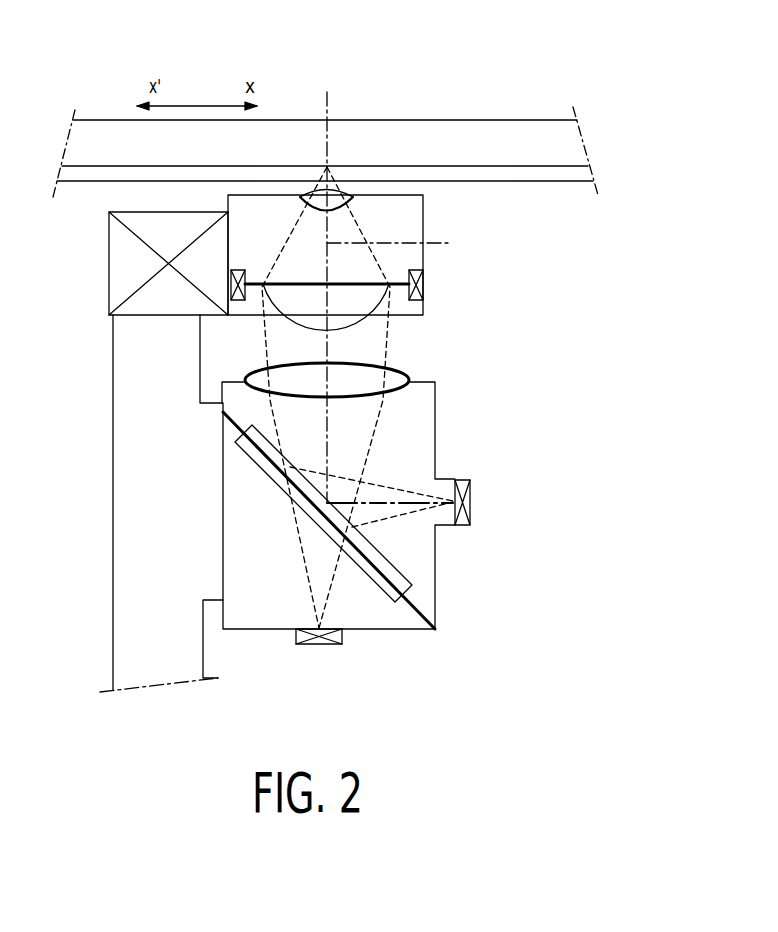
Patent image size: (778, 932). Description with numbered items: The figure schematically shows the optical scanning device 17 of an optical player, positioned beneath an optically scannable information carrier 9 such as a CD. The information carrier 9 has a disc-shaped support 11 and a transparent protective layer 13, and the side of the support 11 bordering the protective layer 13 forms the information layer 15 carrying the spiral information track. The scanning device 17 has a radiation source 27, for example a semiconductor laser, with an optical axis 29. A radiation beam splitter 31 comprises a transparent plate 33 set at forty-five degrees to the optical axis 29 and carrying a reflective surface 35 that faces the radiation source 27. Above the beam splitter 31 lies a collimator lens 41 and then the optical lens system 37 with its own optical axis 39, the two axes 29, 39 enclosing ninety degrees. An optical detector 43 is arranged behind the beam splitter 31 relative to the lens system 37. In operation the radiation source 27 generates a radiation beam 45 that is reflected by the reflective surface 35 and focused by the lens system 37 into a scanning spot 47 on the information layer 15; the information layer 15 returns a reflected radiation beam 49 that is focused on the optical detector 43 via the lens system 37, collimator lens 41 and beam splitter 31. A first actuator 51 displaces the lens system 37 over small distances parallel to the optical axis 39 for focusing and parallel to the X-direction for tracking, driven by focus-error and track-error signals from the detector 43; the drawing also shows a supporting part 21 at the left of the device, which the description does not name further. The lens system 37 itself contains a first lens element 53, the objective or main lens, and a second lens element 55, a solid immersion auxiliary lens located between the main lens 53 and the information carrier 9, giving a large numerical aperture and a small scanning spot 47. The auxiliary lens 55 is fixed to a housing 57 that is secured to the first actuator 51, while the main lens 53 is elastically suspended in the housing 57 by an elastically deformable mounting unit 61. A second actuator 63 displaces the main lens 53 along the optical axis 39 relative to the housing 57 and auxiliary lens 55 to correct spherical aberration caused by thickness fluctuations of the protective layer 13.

The information carrier 9 is at (498, 98).
The disc-shaped support 11 is at (442, 133).
The transparent protective layer 13 is at (573, 173).
The information layer 15 is at (517, 167).
The optical scanning device 17 is at (577, 427).
The frame 21 is at (125, 622).
The radiation source 27 is at (472, 503).
The optical axis 29 is at (378, 501).
The radiation beam splitter 31 is at (235, 463).
The transparent plate 33 is at (387, 571).
The reflective surface 35 is at (382, 556).
The optical lens system 37 is at (493, 293).
The optical axis 39 is at (402, 248).
The collimator lens 41 is at (410, 384).
The optical detector 43 is at (317, 647).
The radiation beam 45 is at (400, 489).
The scanning spot 47 is at (327, 167).
The reflected radiation beam 49 is at (304, 562).
The first actuator 51 is at (117, 263).
The first lens element 53 is at (290, 317).
The second lens element 55 is at (340, 205).
The housing 57 is at (424, 265).
The elastically deformable mounting unit 61 is at (305, 283).
The second actuator 63 is at (242, 268).